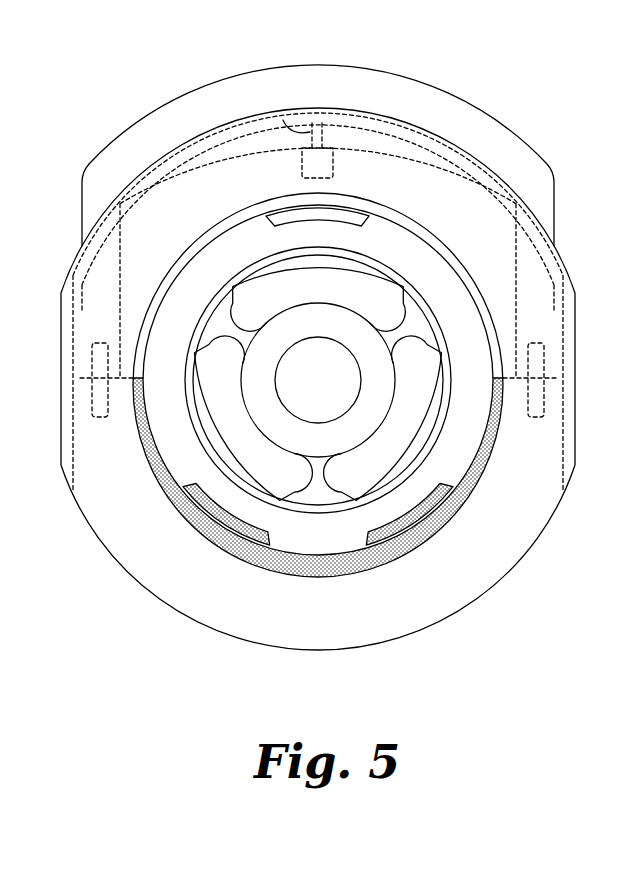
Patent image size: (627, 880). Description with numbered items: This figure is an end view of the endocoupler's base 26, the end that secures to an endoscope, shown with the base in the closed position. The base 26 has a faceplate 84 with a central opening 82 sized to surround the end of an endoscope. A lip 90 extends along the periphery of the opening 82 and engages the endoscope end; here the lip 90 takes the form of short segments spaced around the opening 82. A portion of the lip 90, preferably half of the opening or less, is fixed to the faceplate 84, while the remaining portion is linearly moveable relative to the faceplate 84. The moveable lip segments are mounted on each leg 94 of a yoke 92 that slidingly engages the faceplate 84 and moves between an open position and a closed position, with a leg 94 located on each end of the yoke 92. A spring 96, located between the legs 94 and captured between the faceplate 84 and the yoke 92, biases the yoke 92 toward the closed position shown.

The base 26 is at (315, 341).
The opening 82 is at (185, 448).
The faceplate 84 is at (443, 604).
The lip 90 is at (336, 212).
The yoke 92 is at (403, 98).
The leg 94 is at (80, 265).
The spring 96 is at (283, 118).